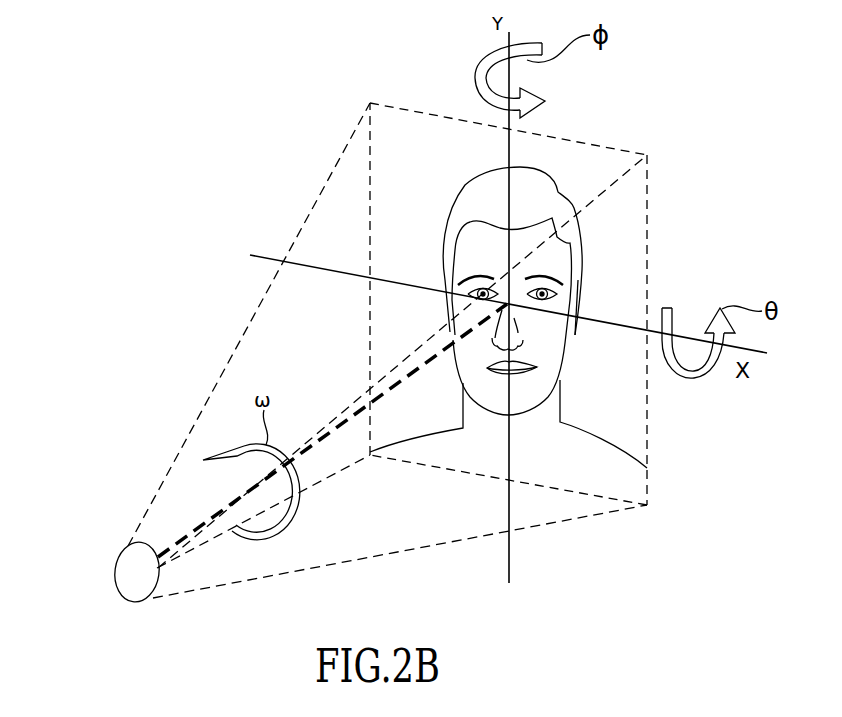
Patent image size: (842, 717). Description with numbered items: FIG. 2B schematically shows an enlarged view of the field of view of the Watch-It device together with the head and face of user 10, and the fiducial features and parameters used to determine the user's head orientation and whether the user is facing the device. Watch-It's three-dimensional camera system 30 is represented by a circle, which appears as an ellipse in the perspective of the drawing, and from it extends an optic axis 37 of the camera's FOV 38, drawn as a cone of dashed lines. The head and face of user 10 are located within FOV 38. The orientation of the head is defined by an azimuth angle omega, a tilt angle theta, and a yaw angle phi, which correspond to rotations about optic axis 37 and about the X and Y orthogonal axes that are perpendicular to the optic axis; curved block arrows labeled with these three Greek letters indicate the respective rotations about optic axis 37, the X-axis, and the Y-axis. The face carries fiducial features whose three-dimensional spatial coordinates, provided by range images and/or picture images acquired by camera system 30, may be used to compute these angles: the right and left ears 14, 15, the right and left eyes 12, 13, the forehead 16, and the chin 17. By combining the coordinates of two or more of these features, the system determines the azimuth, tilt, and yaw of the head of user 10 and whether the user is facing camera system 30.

The user 10 is at (571, 176).
The right eye 12 is at (478, 293).
The left eye 13 is at (543, 295).
The right ear 14 is at (478, 294).
The left ear 15 is at (583, 297).
The forehead 16 is at (473, 238).
The chin 17 is at (525, 395).
The 3D camera system 30 is at (114, 572).
The optic axis 37 is at (322, 437).
The FOV 38 is at (350, 393).